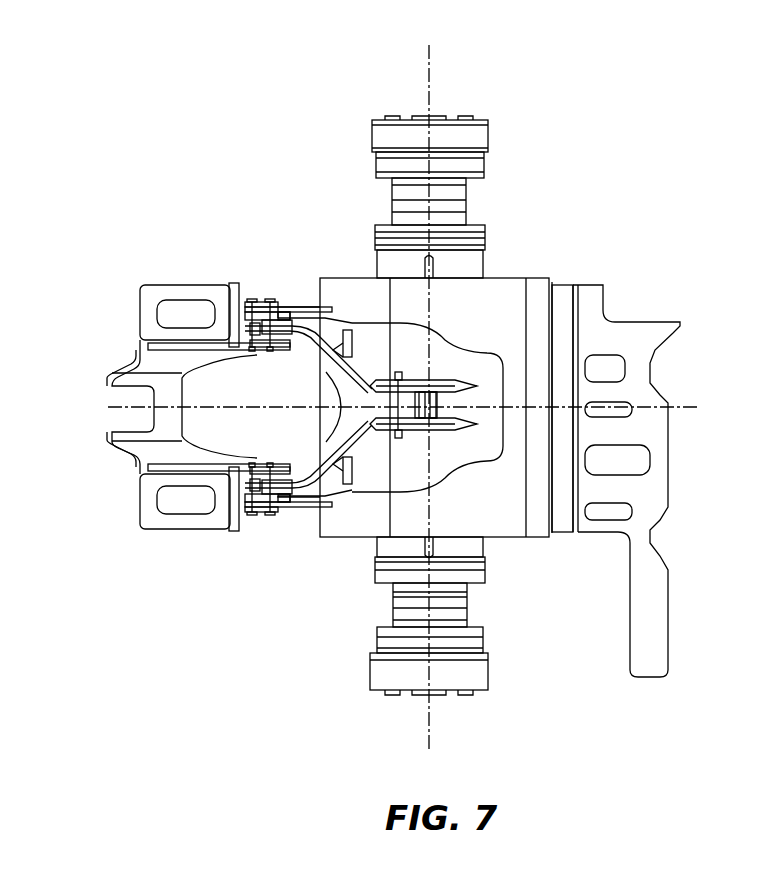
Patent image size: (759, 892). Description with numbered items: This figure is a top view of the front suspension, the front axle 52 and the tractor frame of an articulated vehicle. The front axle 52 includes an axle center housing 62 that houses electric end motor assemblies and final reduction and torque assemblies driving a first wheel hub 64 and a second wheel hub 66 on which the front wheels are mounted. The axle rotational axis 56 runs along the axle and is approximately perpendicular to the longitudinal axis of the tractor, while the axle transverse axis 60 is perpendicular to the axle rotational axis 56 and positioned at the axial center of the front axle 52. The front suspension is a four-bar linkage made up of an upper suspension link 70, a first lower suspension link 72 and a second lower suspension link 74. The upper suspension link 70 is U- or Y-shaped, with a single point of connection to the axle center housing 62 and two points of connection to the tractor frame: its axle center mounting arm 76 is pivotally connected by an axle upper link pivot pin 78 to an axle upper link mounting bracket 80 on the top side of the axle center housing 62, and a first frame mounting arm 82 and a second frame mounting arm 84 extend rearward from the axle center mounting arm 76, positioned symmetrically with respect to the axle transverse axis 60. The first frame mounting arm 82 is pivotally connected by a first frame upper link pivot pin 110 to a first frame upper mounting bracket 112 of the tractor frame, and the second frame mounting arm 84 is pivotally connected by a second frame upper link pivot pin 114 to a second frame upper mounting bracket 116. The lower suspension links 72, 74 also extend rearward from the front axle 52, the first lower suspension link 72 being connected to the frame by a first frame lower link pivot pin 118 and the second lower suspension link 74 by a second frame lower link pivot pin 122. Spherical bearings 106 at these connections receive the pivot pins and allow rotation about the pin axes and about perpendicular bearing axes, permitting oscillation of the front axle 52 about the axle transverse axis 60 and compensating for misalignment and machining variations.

The axle rotational axis 56 is at (427, 67).
The axle transverse axis 60 is at (692, 405).
The axle center housing 62 is at (540, 500).
The first wheel hub 64 is at (488, 680).
The second wheel hub 66 is at (488, 137).
The front axle 52 is at (483, 247).
The upper suspension link 70 is at (347, 380).
The first lower suspension link 72 is at (330, 500).
The second lower suspension link 74 is at (327, 332).
The axle center mounting arm 76 is at (478, 443).
The axle upper link pivot pin 78 is at (398, 377).
The axle upper link mounting bracket 80 is at (412, 390).
The first frame mounting arm 82 is at (290, 328).
The second frame mounting arm 84 is at (288, 487).
The spherical bearings 106 is at (247, 322).
The first frame upper link pivot pin 110 is at (270, 518).
The first frame upper mounting bracket 112 is at (287, 512).
The second frame upper link pivot pin 114 is at (270, 298).
The second frame upper mounting bracket 116 is at (287, 310).
The first frame lower link pivot pin 118 is at (253, 518).
The second frame lower link pivot pin 122 is at (253, 300).